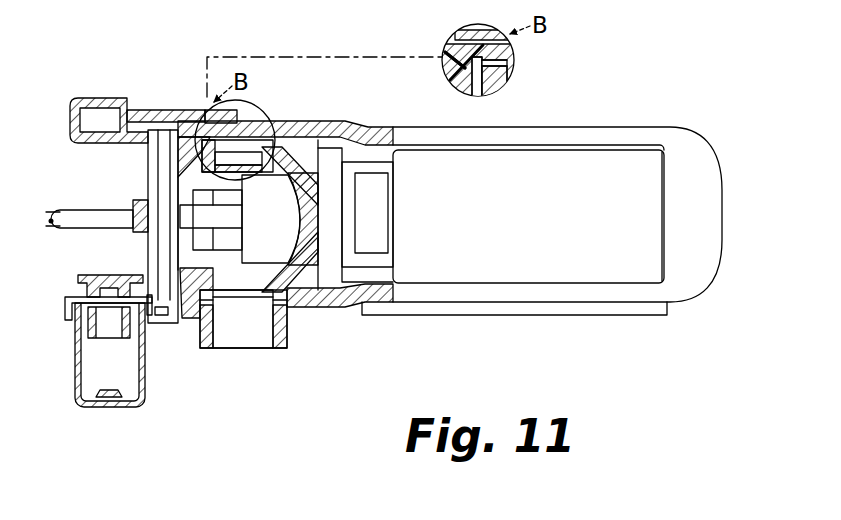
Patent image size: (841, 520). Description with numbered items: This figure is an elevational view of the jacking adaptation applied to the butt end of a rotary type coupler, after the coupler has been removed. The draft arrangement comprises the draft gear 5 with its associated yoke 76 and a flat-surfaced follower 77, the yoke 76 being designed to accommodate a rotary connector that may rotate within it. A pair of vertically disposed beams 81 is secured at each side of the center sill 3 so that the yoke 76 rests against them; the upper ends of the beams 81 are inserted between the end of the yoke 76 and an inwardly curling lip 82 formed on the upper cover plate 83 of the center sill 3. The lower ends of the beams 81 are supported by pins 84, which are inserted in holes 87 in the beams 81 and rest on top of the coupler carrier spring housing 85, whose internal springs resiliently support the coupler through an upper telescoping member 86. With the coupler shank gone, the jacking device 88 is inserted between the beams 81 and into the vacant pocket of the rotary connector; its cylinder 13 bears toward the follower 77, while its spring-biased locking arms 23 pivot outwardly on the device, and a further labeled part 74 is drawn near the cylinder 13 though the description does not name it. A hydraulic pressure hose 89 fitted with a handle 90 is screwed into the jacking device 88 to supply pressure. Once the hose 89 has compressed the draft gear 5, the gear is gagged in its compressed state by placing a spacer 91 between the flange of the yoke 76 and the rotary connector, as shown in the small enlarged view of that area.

The center sill 3 is at (140, 118).
The draft gear 5 is at (608, 167).
The cylinder 13 is at (290, 187).
The locking arm 23 is at (222, 217).
The bearing housing 74 is at (264, 137).
The yoke 76 is at (332, 135).
The follower 77 is at (330, 228).
The beam 81 is at (158, 165).
The lip 82 is at (79, 121).
The upper cover plate 83 is at (198, 120).
The pin 84 is at (66, 312).
The coupler carrier spring housing 85 is at (80, 368).
The upper telescoping member 86 is at (112, 280).
The hole 87 is at (158, 297).
The jacking device 88 is at (231, 254).
The hydraulic pressure hose 89 is at (65, 213).
The handle 90 is at (140, 205).
The spacer 91 is at (478, 90).